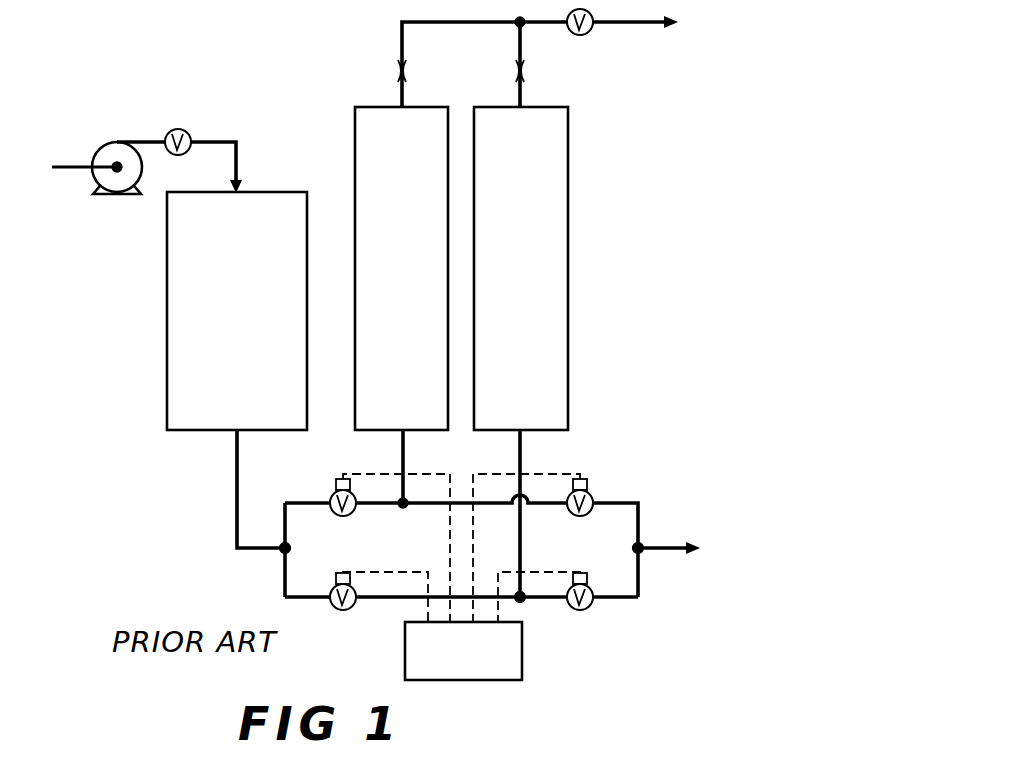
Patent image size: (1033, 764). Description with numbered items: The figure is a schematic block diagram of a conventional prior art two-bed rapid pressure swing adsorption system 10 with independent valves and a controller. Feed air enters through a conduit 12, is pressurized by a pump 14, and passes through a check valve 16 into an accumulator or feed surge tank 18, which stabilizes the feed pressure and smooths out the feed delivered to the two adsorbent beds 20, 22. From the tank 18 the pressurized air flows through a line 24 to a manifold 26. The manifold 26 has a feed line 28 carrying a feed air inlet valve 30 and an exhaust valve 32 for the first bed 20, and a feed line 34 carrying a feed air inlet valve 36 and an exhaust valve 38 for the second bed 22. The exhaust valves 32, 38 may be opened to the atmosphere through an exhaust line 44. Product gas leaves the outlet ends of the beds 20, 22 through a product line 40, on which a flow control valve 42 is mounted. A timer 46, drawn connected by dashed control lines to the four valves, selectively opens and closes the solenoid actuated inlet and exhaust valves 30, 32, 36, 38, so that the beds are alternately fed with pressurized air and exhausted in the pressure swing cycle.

The two-bed R.P.S.A. system 10 is at (288, 136).
The conduit 12 is at (80, 158).
The pump 14 is at (113, 152).
The check valve 16 is at (178, 129).
The feed surge tank 18 is at (249, 313).
The adsorbent bed 20 is at (408, 267).
The adsorbent bed 22 is at (533, 267).
The line 24 is at (234, 466).
The manifold 26 is at (280, 552).
The feed line 28 is at (307, 501).
The feed air inlet valve 30 is at (351, 514).
The exhaust valve 32 is at (591, 494).
The feed line 34 is at (303, 600).
The feed air inlet valve 36 is at (351, 609).
The exhaust valve 38 is at (589, 609).
The product line 40 is at (471, 24).
The flow control valve 42 is at (586, 34).
The exhaust line 44 is at (640, 533).
The timer 46 is at (475, 662).